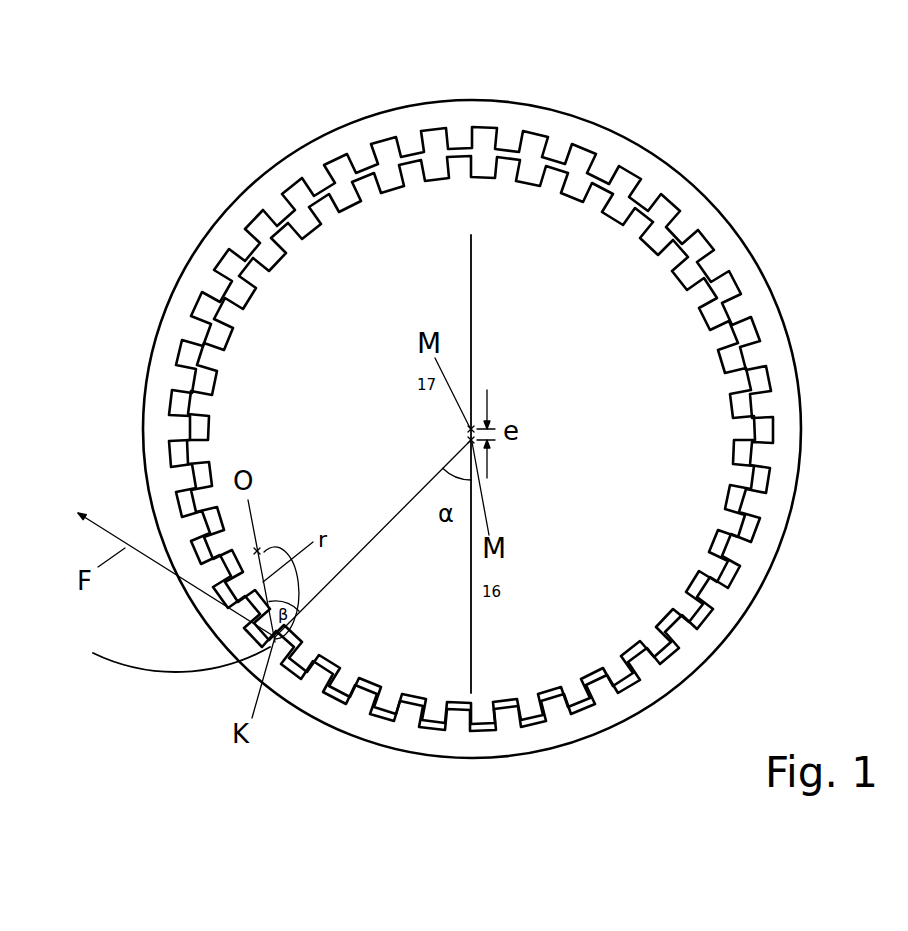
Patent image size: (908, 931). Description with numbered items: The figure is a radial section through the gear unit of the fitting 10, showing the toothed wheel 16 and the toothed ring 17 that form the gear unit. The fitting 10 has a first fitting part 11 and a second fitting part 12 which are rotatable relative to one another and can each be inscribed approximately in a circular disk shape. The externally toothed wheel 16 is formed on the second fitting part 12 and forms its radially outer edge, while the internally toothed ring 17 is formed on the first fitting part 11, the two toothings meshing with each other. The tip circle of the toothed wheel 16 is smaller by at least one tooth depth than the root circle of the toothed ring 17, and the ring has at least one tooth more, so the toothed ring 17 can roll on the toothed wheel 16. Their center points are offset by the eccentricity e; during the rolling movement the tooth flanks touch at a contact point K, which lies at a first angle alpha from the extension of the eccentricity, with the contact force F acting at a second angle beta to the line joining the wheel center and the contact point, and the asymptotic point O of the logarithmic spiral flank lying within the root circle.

The fitting 10 is at (746, 173).
The first fitting part 11 is at (730, 248).
The second fitting part 12 is at (663, 305).
The toothed wheel 16 is at (236, 313).
The toothed ring 17 is at (204, 337).